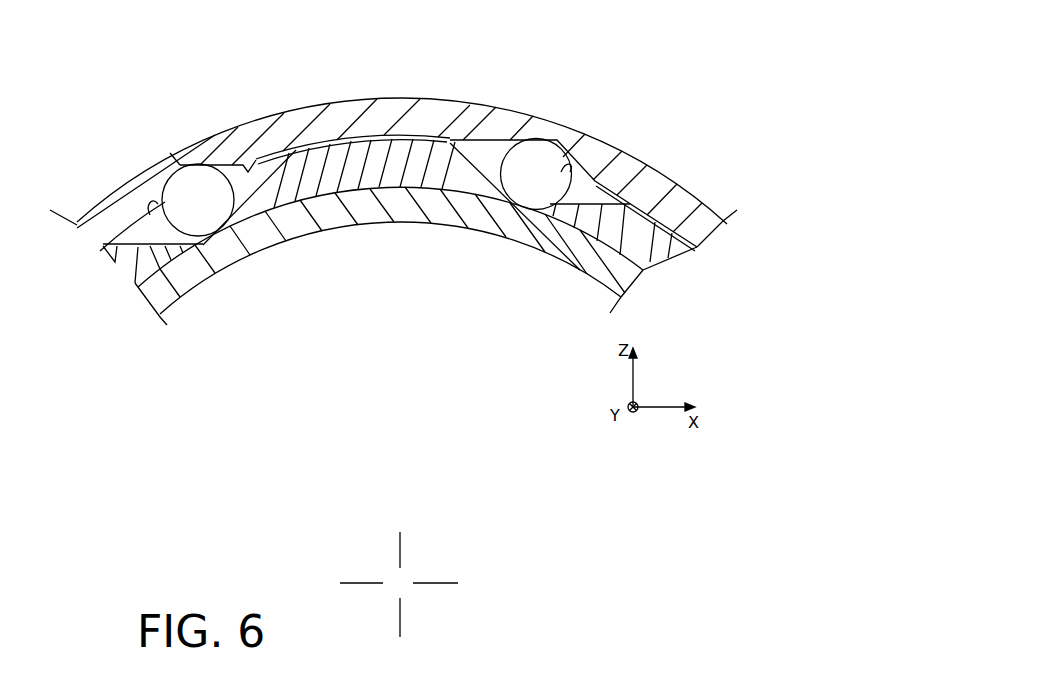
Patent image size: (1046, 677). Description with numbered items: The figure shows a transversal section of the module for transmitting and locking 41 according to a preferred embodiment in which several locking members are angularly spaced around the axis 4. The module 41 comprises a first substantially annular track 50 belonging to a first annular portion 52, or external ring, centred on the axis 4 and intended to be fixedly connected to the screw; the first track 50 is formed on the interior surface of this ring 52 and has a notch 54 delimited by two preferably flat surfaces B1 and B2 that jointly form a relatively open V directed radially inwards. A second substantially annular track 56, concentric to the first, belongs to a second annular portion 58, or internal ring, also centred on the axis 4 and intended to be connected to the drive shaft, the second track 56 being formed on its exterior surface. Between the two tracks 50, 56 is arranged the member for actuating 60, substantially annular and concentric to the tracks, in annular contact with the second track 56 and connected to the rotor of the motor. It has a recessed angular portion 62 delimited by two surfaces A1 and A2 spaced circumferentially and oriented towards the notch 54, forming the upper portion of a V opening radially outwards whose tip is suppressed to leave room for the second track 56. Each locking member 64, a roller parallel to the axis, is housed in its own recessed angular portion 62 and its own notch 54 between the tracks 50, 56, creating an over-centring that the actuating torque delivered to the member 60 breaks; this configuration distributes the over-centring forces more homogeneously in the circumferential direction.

The module for transmitting and locking 41 is at (622, 47).
The first annular portion 52 is at (273, 112).
The first substantially annular track 50 is at (243, 160).
The notch 54 is at (180, 165).
The locking member 64 is at (153, 200).
The second substantially annular track 56 is at (287, 223).
The second annular portion 58 is at (563, 262).
The member for actuating 60 is at (125, 270).
The recessed angular portion 62 is at (598, 202).
The surface B1 is at (185, 190).
The surface B2 is at (230, 225).
The surface A1 is at (152, 233).
The surface A2 is at (348, 221).
The axis 4 is at (400, 583).